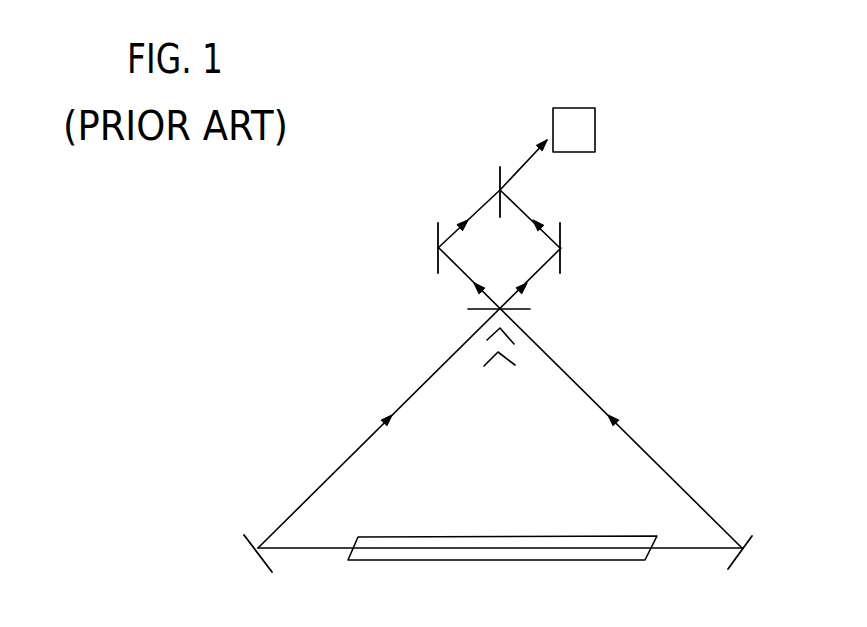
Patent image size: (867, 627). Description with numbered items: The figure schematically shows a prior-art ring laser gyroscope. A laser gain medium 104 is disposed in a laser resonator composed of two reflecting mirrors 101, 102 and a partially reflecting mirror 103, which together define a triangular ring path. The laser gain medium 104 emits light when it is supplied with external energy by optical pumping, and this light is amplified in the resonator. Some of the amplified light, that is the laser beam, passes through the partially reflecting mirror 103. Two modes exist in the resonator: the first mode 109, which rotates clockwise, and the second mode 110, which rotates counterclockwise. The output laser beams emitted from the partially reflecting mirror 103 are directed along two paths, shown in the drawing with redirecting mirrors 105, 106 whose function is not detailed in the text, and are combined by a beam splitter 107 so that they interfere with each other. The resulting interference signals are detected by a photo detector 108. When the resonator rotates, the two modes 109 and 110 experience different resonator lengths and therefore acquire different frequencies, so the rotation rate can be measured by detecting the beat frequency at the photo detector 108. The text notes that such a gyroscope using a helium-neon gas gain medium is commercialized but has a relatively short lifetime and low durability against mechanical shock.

The reflecting mirror 101 is at (752, 535).
The reflecting mirror 102 is at (244, 534).
The partially reflecting mirror 103 is at (527, 310).
The laser gain medium 104 is at (502, 537).
The mirror 105 is at (436, 233).
The mirror 106 is at (562, 225).
The beam splitter 107 is at (499, 183).
The photo detector 108 is at (596, 127).
The first mode 109 is at (477, 347).
The second mode 110 is at (515, 365).